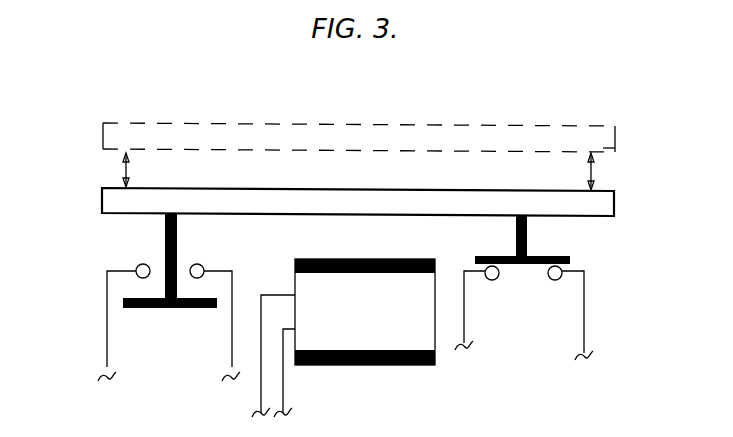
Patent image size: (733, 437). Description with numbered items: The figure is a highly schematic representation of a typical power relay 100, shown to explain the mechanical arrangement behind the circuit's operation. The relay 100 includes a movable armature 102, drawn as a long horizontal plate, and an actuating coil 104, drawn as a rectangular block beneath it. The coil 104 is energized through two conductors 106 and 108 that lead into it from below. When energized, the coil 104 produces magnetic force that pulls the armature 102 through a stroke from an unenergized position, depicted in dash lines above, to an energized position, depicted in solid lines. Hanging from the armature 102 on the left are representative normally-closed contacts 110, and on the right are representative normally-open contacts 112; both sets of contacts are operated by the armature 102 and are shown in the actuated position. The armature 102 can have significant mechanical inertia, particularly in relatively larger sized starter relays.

The relay 100 is at (573, 97).
The movable armature 102 is at (618, 140).
The actuating coil 104 is at (385, 365).
The conductor 106 is at (260, 388).
The conductor 108 is at (284, 395).
The normally-closed contacts 110 is at (95, 244).
The normally-open contacts 112 is at (597, 262).